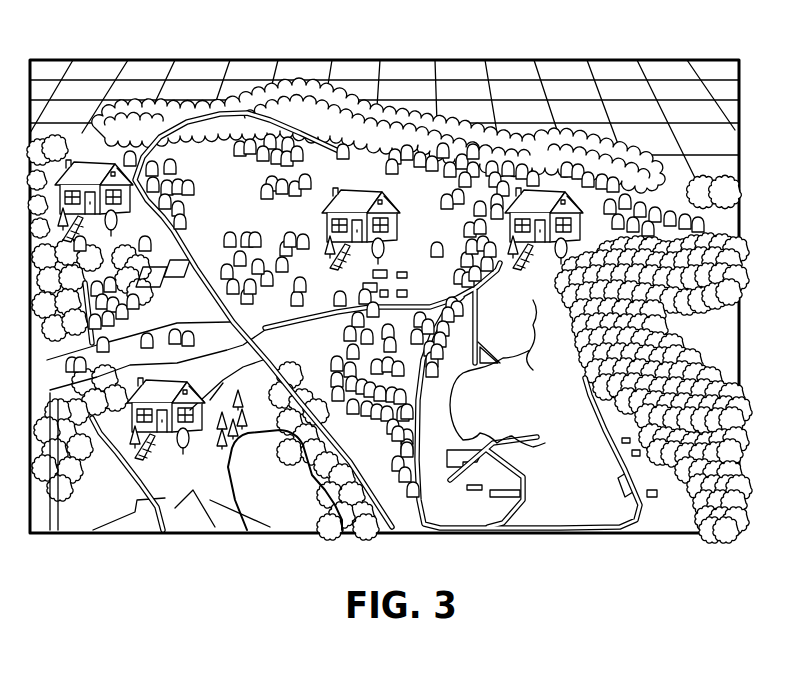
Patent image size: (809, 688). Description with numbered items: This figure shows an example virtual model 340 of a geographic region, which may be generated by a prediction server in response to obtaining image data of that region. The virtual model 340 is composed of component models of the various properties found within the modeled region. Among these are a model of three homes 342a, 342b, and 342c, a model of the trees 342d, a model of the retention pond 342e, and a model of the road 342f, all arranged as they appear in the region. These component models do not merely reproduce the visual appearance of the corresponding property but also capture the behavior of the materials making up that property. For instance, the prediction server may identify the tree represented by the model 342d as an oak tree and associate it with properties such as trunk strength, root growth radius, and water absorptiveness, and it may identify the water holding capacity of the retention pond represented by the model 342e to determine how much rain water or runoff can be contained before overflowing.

The virtual model 340 is at (626, 72).
The home model 342a is at (362, 192).
The home model 342b is at (83, 163).
The home model 342c is at (543, 188).
The tree model 342d is at (252, 280).
The retention pond model 342e is at (503, 357).
The road model 342f is at (204, 243).